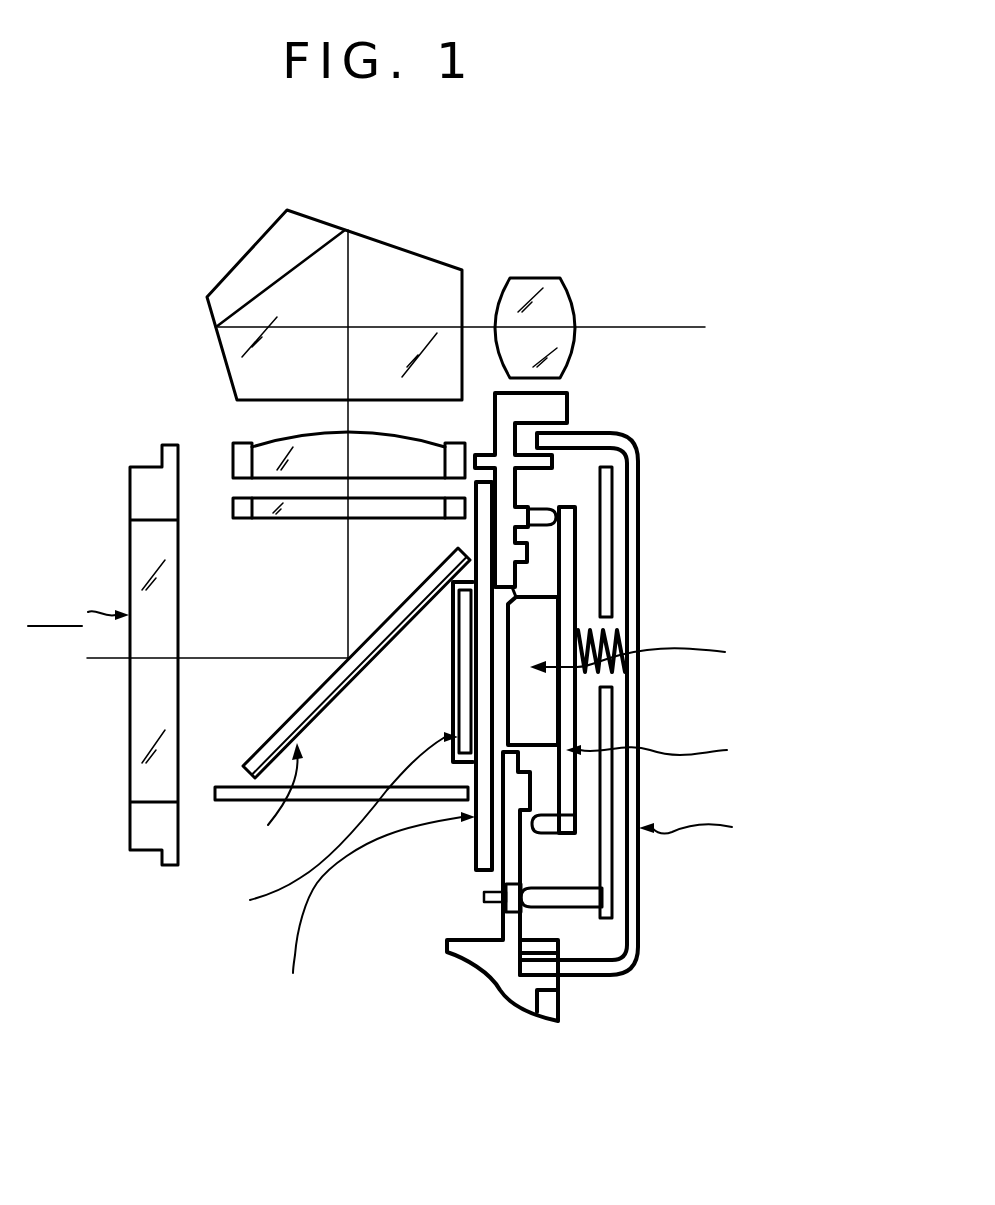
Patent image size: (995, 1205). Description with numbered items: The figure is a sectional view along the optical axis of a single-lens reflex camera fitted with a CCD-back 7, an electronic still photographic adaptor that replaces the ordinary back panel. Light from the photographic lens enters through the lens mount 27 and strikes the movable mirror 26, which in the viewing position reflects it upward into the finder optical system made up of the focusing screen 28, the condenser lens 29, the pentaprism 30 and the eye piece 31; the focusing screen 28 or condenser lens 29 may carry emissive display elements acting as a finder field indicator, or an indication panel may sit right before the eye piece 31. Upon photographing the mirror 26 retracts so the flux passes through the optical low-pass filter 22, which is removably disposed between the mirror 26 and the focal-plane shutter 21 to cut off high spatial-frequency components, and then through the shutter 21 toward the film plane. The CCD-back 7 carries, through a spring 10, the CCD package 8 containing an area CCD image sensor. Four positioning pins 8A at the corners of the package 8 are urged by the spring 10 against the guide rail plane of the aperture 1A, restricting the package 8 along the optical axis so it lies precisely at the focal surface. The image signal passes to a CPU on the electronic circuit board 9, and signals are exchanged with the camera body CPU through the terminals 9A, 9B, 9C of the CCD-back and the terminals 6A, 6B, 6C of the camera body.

The finder optical system element 30 is at (233, 268).
The eye piece 31 is at (538, 278).
The condenser lens 29 is at (235, 447).
The focusing screen 28 is at (242, 518).
The lens mount of SLR camera 27 is at (130, 826).
The movable mirror 26 is at (283, 735).
The optical low-pass filter 22 is at (453, 724).
The focal-plane shutter 21 is at (476, 862).
The spring 10 is at (603, 633).
The aperture 1A is at (518, 593).
The electronic circuit board 9 is at (682, 654).
The CCD package 8 is at (550, 728).
The positioning pins 8A is at (547, 512).
The CCD-back 7 is at (633, 797).
The terminal 6A is at (470, 905).
The terminal 6B is at (470, 905).
The terminal 6C is at (484, 898).
The terminal 9A is at (686, 707).
The terminal 9B is at (686, 707).
The terminal 9C is at (583, 905).